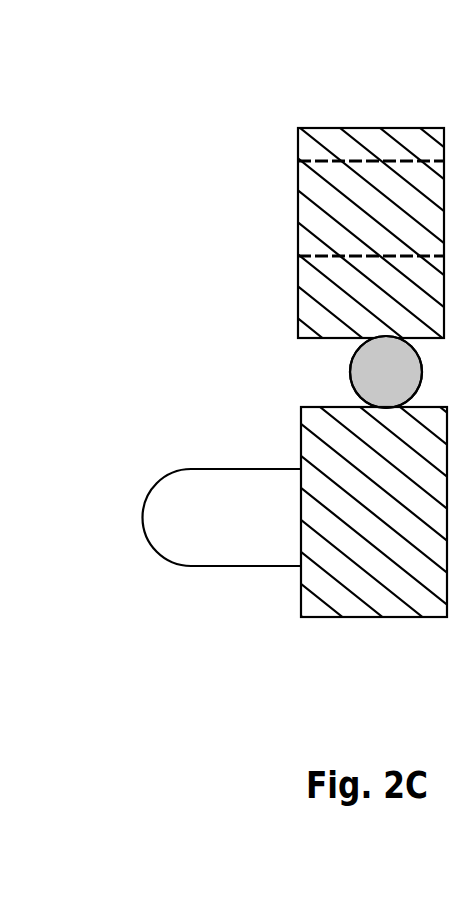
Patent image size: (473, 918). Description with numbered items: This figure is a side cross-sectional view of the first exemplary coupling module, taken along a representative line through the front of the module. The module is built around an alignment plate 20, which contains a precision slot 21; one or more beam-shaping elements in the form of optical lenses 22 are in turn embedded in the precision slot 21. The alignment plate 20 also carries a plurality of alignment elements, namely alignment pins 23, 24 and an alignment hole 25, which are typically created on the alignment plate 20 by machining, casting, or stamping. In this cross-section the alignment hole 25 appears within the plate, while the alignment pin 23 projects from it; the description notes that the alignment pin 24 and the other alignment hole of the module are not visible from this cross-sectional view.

The alignment plate 20 is at (246, 176).
The precision slot 21 is at (347, 358).
The optical lenses 22 is at (388, 379).
The alignment pin 23 is at (180, 528).
The alignment pin 24 is at (2, 178).
The alignment hole 25 is at (323, 255).